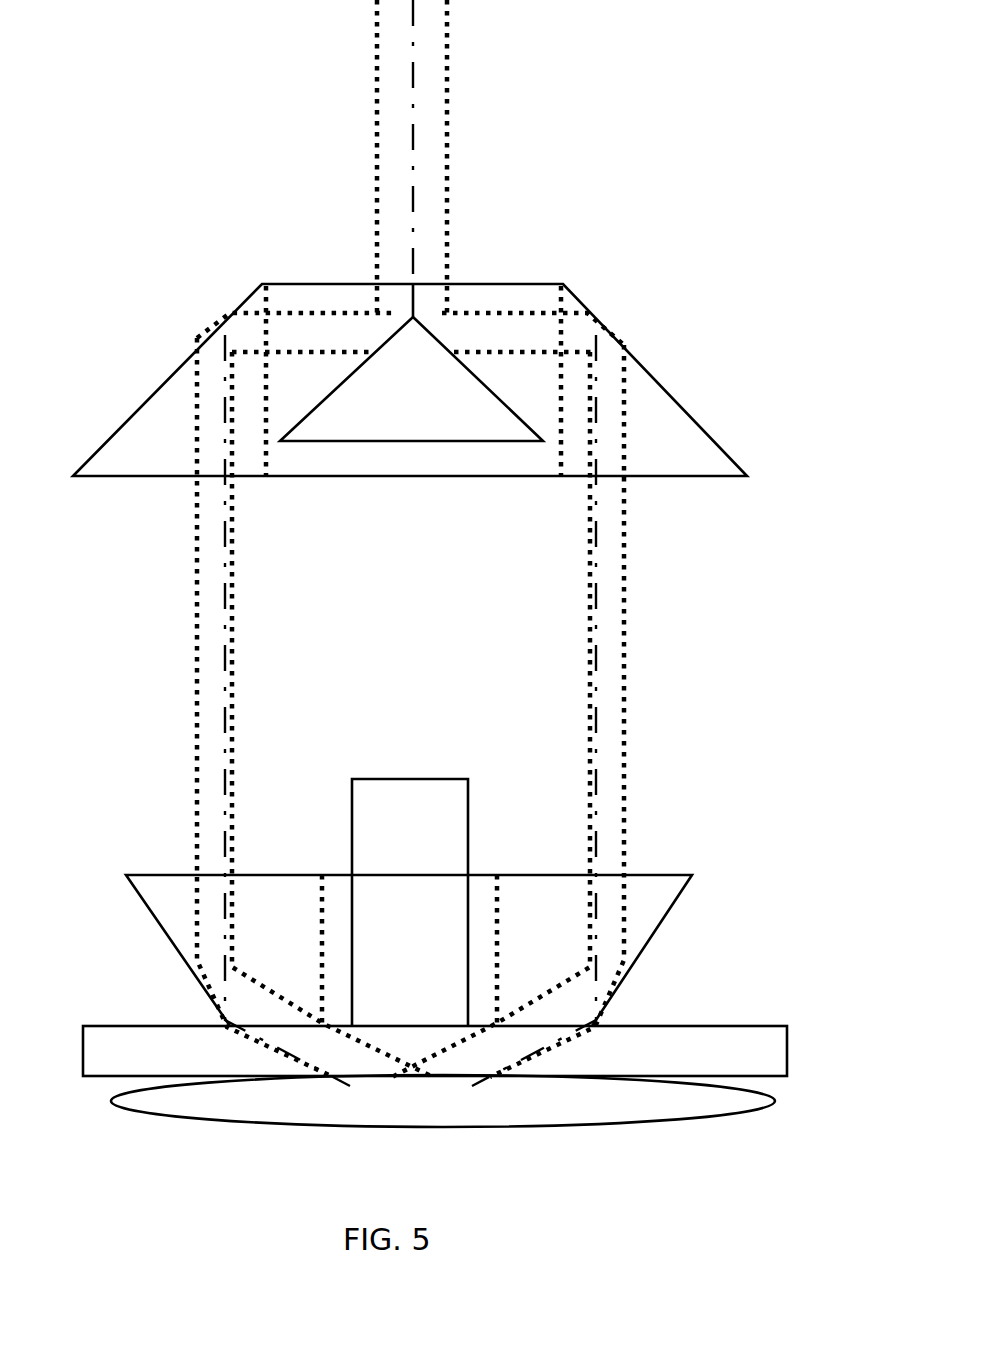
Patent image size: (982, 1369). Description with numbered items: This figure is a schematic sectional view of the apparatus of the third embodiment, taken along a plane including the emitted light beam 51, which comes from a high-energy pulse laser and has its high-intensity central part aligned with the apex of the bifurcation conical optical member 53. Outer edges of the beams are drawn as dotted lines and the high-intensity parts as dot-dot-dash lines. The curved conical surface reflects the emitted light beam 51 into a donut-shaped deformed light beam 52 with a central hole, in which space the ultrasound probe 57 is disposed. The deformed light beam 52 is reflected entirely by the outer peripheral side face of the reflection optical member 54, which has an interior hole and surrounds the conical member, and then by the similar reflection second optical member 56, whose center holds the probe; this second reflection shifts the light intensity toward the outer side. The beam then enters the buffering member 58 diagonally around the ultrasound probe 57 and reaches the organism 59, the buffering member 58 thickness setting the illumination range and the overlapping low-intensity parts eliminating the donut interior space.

The emitted light beam 51 is at (427, 160).
The deformed light beam 52 is at (212, 532).
The bifurcation conical optical member 53 is at (417, 408).
The reflection optical member 54 is at (680, 448).
The reflection second optical member 56 is at (650, 902).
The ultrasound probe 57 is at (382, 828).
The buffering member 58 is at (662, 1055).
The organism 59 is at (415, 1110).